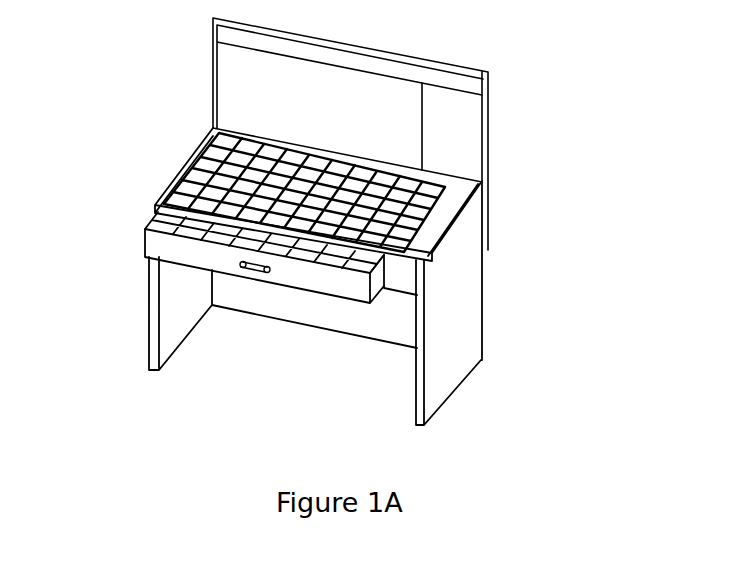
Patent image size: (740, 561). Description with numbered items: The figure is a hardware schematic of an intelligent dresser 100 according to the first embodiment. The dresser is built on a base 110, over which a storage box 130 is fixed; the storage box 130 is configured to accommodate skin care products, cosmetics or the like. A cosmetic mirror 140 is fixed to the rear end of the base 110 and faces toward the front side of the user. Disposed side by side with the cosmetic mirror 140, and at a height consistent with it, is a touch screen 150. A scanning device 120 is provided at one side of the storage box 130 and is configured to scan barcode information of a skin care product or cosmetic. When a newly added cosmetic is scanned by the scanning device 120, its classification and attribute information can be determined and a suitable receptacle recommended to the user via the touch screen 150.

The intelligent dresser 100 is at (351, 229).
The base 110 is at (462, 318).
The scanning device 120 is at (440, 215).
The storage box 130 is at (145, 233).
The cosmetic mirror 140 is at (273, 105).
The touch screen 150 is at (440, 132).